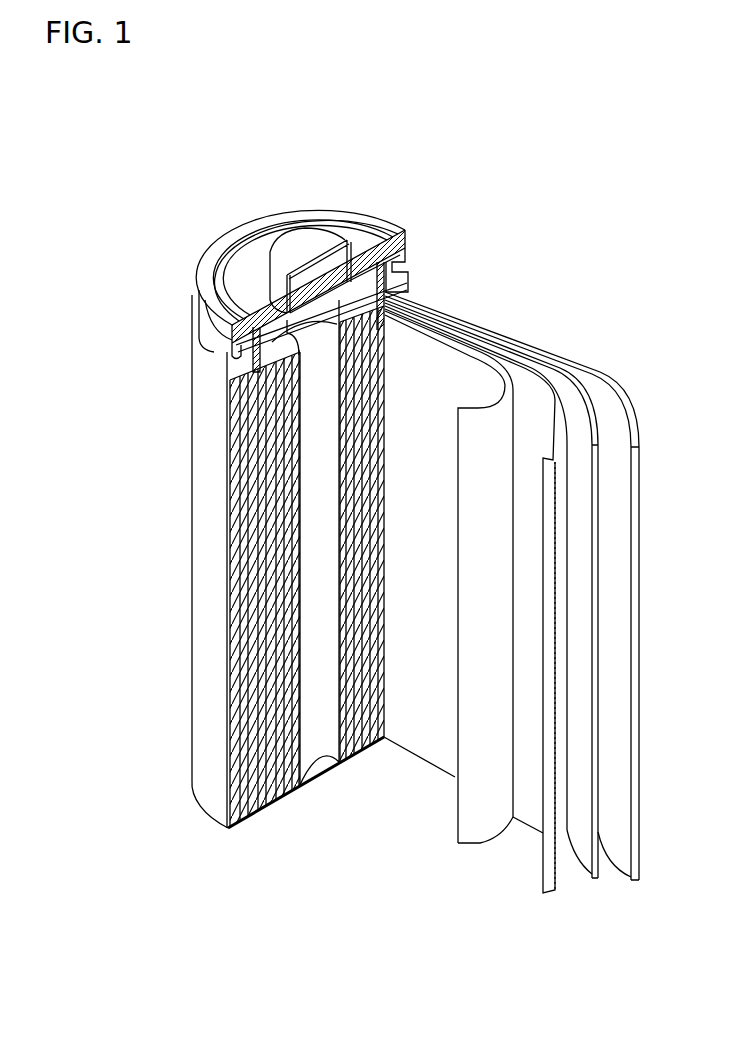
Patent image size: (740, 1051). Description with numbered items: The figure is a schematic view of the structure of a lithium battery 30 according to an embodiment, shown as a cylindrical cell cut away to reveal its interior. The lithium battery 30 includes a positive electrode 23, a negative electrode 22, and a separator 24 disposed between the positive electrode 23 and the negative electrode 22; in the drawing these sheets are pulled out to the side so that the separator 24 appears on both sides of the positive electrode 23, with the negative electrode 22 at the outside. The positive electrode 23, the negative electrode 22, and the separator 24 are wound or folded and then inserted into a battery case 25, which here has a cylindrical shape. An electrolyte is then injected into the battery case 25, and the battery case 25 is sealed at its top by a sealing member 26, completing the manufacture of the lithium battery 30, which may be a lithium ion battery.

The lithium battery 30 is at (358, 161).
The sealing member 26 is at (296, 247).
The battery case 25 is at (197, 556).
The separator 24 is at (492, 362).
The positive electrode 23 is at (556, 416).
The negative electrode 22 is at (625, 428).